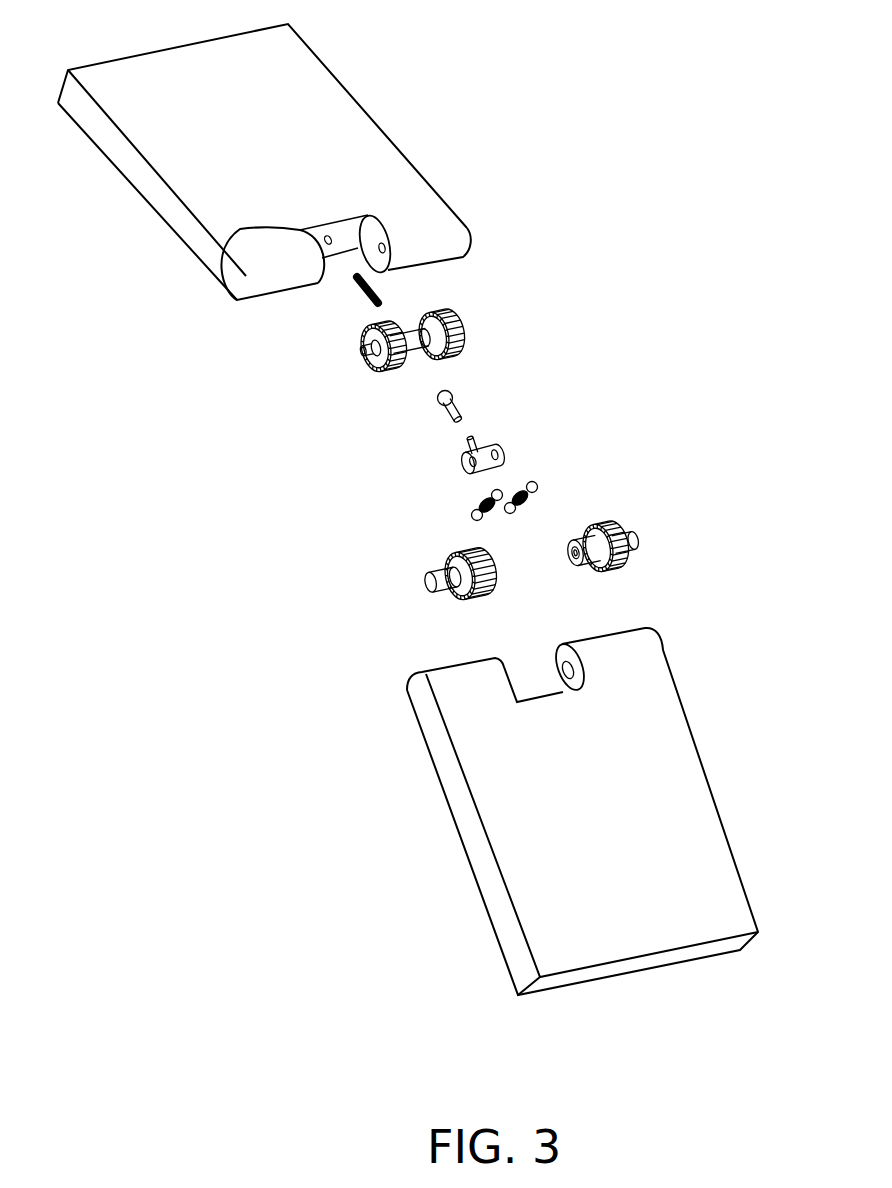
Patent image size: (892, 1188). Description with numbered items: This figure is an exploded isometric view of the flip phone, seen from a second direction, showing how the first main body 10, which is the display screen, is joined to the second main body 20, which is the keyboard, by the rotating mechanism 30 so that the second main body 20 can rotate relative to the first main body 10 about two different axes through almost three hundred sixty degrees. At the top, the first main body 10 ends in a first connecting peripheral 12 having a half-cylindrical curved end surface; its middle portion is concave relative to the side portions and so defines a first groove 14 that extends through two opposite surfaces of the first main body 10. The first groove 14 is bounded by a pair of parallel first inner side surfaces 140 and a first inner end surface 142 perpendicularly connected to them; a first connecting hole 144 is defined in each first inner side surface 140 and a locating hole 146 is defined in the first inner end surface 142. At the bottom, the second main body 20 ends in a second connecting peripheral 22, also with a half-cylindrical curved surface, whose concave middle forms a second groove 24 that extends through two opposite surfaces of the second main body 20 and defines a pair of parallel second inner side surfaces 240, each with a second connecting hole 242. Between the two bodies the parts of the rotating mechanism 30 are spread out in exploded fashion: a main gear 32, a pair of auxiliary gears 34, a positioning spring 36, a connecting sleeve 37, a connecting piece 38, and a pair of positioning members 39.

The first main body 10 is at (310, 85).
The first connecting peripheral 12 is at (442, 243).
The first groove 14 is at (333, 277).
The first inner side surfaces 140 is at (373, 230).
The first inner end surface 142 is at (345, 225).
The first connecting hole 144 is at (385, 242).
The locating hole 146 is at (240, 230).
The second main body 20 is at (672, 782).
The second connecting peripheral 22 is at (627, 640).
The second groove 24 is at (527, 667).
The second inner side surfaces 240 is at (578, 687).
The second connecting hole 242 is at (573, 668).
The rotating mechanism 30 is at (578, 407).
The main gear 32 is at (462, 304).
The auxiliary gears 34 is at (622, 518).
The positioning spring 36 is at (363, 295).
The connecting sleeve 37 is at (470, 412).
The connecting piece 38 is at (462, 477).
The positioning members 39 is at (518, 482).